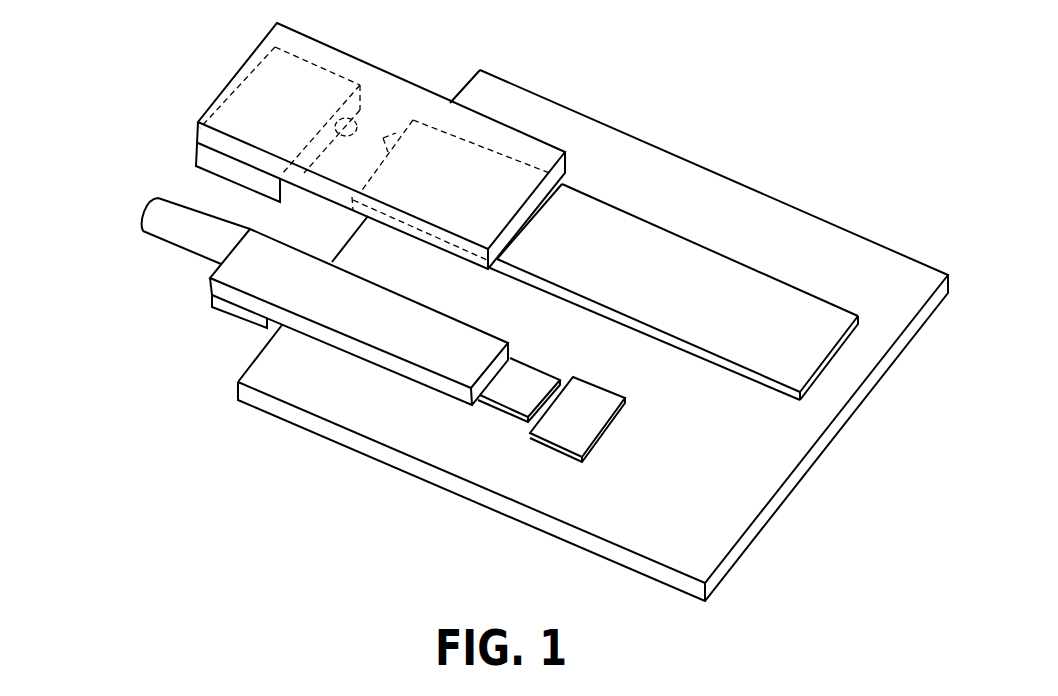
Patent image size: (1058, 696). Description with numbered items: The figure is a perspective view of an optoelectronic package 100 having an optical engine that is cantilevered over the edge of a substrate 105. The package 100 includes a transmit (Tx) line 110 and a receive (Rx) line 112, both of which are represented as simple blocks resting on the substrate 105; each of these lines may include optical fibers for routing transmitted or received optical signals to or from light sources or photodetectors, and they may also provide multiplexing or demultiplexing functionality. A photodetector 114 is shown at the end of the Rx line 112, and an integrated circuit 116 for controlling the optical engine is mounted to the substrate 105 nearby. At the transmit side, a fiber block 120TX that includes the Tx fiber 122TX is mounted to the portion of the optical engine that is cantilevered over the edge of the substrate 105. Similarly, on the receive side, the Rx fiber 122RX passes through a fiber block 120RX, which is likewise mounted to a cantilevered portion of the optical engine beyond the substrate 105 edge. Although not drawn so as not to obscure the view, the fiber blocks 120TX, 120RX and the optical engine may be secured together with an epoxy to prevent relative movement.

The optoelectronic package 100 is at (735, 58).
The substrate 105 is at (702, 514).
The transmit (Tx) line 110 is at (702, 295).
The receive (Rx) line 112 is at (394, 325).
The photodetector 114 is at (510, 392).
The integrated circuit 116 is at (577, 422).
The fiber block 120TX is at (333, 183).
The fiber block 120RX is at (241, 309).
The Tx fiber 122TX is at (347, 133).
The Rx fiber 122RX is at (168, 225).